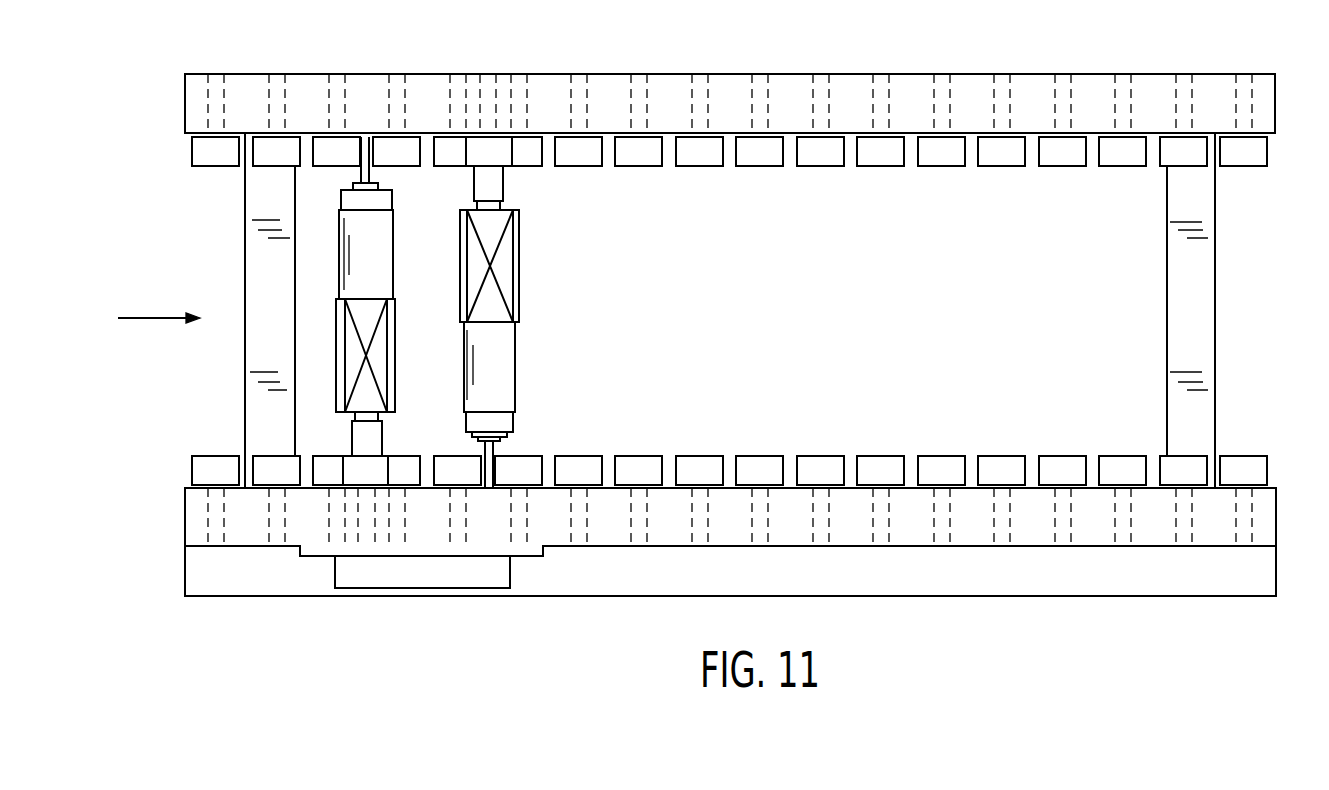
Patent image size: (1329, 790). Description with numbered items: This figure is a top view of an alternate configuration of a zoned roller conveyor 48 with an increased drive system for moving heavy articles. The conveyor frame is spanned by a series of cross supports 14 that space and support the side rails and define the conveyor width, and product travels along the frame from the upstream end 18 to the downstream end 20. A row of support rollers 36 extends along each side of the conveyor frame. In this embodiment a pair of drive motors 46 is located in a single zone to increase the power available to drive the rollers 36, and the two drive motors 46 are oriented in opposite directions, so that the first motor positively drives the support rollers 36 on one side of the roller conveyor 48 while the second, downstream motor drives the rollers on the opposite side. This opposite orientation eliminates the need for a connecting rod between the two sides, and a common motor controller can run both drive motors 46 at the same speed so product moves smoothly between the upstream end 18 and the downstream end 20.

The cross supports 14 is at (272, 272).
The upstream end 18 is at (185, 105).
The downstream end 20 is at (1275, 103).
The support rollers 36 is at (822, 166).
The drive motors 46 is at (380, 257).
The zoned roller conveyor 48 is at (1265, 312).